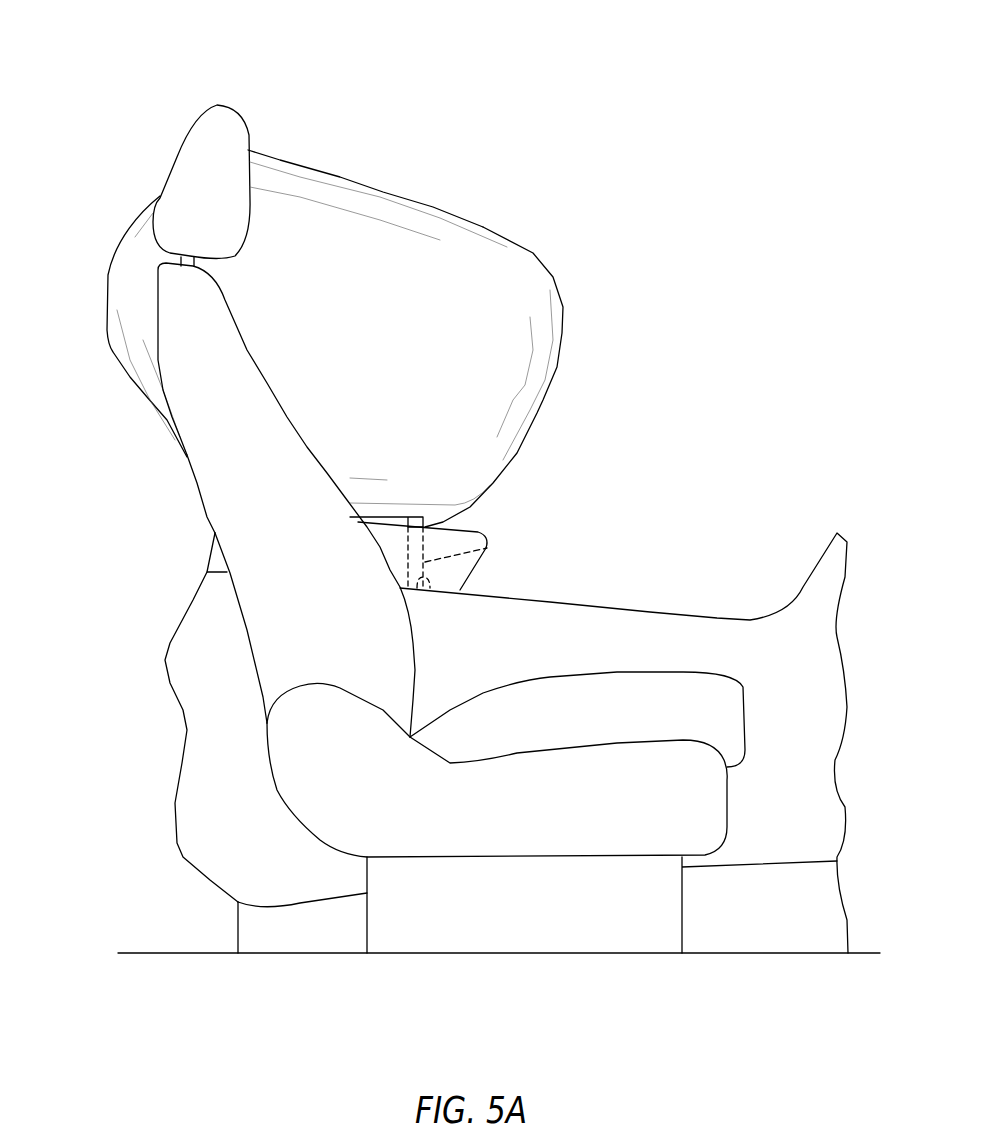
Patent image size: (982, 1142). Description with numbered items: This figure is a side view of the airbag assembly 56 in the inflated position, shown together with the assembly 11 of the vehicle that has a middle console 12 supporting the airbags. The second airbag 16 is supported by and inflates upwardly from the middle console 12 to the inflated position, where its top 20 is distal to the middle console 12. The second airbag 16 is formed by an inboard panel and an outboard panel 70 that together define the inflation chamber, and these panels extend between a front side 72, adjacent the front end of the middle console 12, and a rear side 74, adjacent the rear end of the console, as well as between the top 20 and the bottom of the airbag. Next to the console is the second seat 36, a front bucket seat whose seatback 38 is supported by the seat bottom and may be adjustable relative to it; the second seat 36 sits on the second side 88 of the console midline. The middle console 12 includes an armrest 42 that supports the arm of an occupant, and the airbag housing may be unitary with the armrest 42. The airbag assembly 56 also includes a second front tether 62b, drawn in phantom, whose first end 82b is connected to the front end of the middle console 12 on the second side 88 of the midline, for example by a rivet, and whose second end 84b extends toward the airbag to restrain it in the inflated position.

The assembly 11 is at (264, 74).
The middle console 12 is at (486, 531).
The second airbag 16 is at (413, 260).
The top 20 is at (311, 167).
The second seat 36 is at (157, 307).
The seatback 38 is at (283, 632).
The armrest 42 is at (463, 565).
The airbag assembly 56 is at (577, 163).
The second front tether 62b is at (490, 549).
The outboard panel 70 is at (319, 248).
The front side 72 is at (558, 351).
The rear side 74 is at (110, 257).
The first end 82b is at (433, 588).
The second end 84b is at (427, 521).
The second side 88 is at (462, 580).